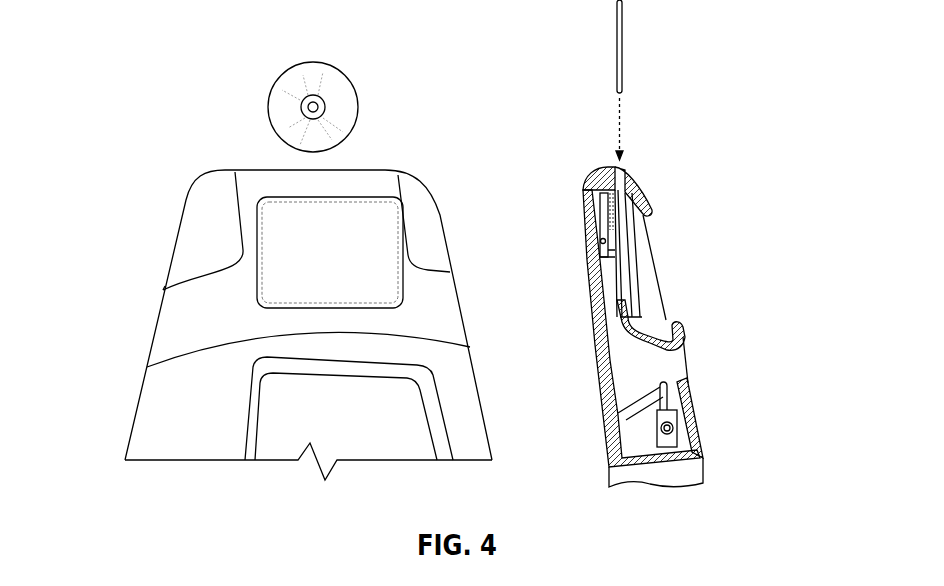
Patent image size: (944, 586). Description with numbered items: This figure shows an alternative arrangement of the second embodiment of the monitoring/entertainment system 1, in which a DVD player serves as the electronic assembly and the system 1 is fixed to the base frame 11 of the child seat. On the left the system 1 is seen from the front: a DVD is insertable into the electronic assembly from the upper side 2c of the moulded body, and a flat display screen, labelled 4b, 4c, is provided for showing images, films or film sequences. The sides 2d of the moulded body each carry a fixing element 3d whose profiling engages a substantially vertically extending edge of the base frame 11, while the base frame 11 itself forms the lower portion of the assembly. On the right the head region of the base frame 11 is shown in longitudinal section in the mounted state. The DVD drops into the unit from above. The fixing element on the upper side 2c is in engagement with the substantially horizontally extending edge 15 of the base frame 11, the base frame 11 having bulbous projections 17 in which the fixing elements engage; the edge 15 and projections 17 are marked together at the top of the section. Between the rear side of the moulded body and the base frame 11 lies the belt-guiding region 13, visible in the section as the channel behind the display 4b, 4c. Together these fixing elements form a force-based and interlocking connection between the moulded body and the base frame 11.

The monitoring/entertainment system 1 is at (690, 212).
The upper side of the moulded body 2c is at (273, 183).
The sides of the moulded body 2d is at (187, 303).
The fixing element 3d is at (165, 340).
The display screen 4b is at (428, 245).
The display frame 4c is at (290, 240).
The base frame 11 is at (160, 423).
The belt-guiding region 13 is at (625, 358).
The substantially horizontally extending edge 15 is at (588, 164).
The bulbous projections 17 is at (597, 173).
The element DVD is at (287, 93).